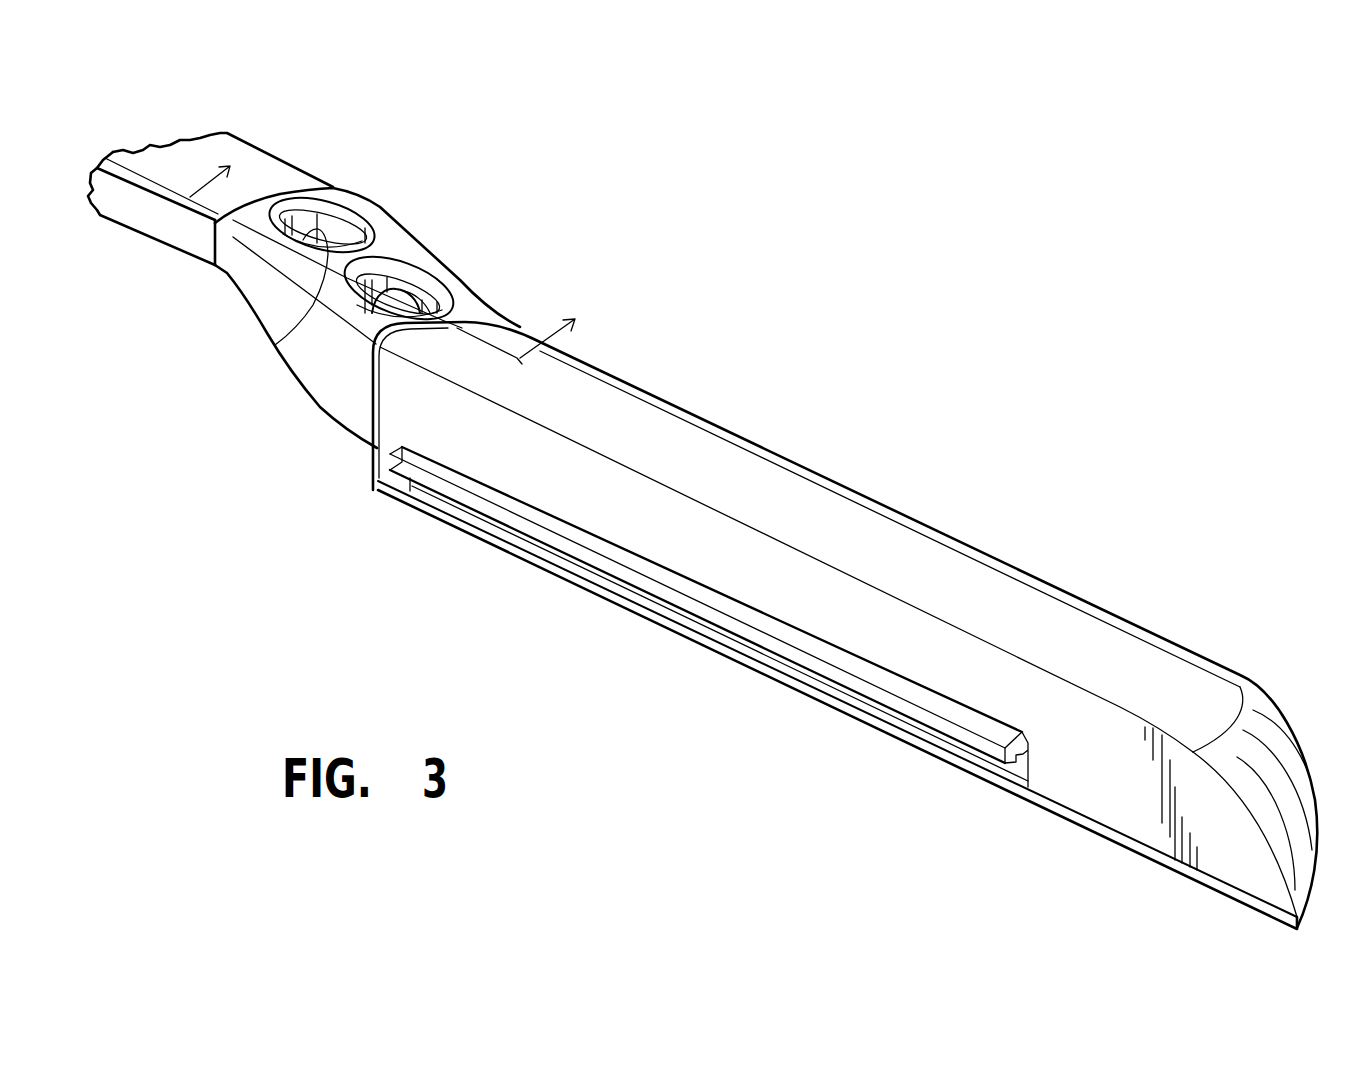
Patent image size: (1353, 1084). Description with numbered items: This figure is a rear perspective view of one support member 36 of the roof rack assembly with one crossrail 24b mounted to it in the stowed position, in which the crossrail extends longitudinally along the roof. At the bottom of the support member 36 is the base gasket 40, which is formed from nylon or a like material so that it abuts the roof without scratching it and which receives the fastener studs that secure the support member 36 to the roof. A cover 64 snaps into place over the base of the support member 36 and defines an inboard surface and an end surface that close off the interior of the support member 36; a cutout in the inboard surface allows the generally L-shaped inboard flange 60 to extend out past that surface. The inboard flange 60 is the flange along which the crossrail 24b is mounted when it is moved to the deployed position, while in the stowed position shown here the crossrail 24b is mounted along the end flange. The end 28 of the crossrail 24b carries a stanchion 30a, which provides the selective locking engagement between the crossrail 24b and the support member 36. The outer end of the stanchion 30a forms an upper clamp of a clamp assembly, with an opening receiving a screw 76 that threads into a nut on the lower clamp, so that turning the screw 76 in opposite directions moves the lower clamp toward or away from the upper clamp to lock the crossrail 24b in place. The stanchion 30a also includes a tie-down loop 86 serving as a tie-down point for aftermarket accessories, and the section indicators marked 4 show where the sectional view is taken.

The crossrail 24b is at (240, 140).
The end 28 is at (333, 188).
The stanchion 30a is at (420, 237).
The screw 76 is at (413, 313).
The tie-down loop 86 is at (275, 345).
The cover 64 is at (660, 417).
The support member 36 is at (924, 520).
The inboard flange 60 is at (672, 588).
The base gasket 40 is at (1097, 836).
The section line 4 is at (393, 254).